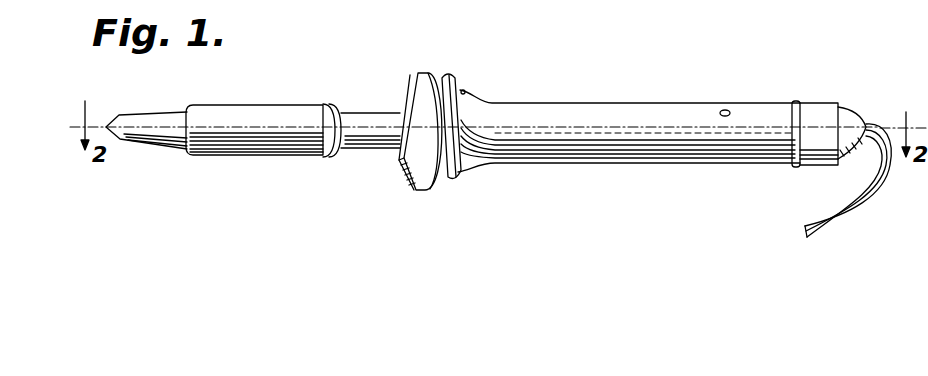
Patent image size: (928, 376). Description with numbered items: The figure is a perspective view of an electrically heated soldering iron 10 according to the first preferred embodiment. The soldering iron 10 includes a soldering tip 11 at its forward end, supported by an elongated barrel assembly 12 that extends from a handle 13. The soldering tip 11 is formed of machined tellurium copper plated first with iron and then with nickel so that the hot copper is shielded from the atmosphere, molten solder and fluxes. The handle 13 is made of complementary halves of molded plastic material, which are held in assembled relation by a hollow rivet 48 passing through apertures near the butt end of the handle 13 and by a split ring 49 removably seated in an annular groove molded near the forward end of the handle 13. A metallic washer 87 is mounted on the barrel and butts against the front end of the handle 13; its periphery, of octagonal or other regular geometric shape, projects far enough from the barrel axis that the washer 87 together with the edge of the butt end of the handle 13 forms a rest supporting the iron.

The soldering iron 10 is at (214, 115).
The soldering tip 11 is at (148, 119).
The elongated barrel assembly 12 is at (202, 103).
The handle 13 is at (588, 106).
The hollow rivet 48 is at (727, 110).
The split ring 49 is at (464, 91).
The metallic washer 87 is at (418, 75).